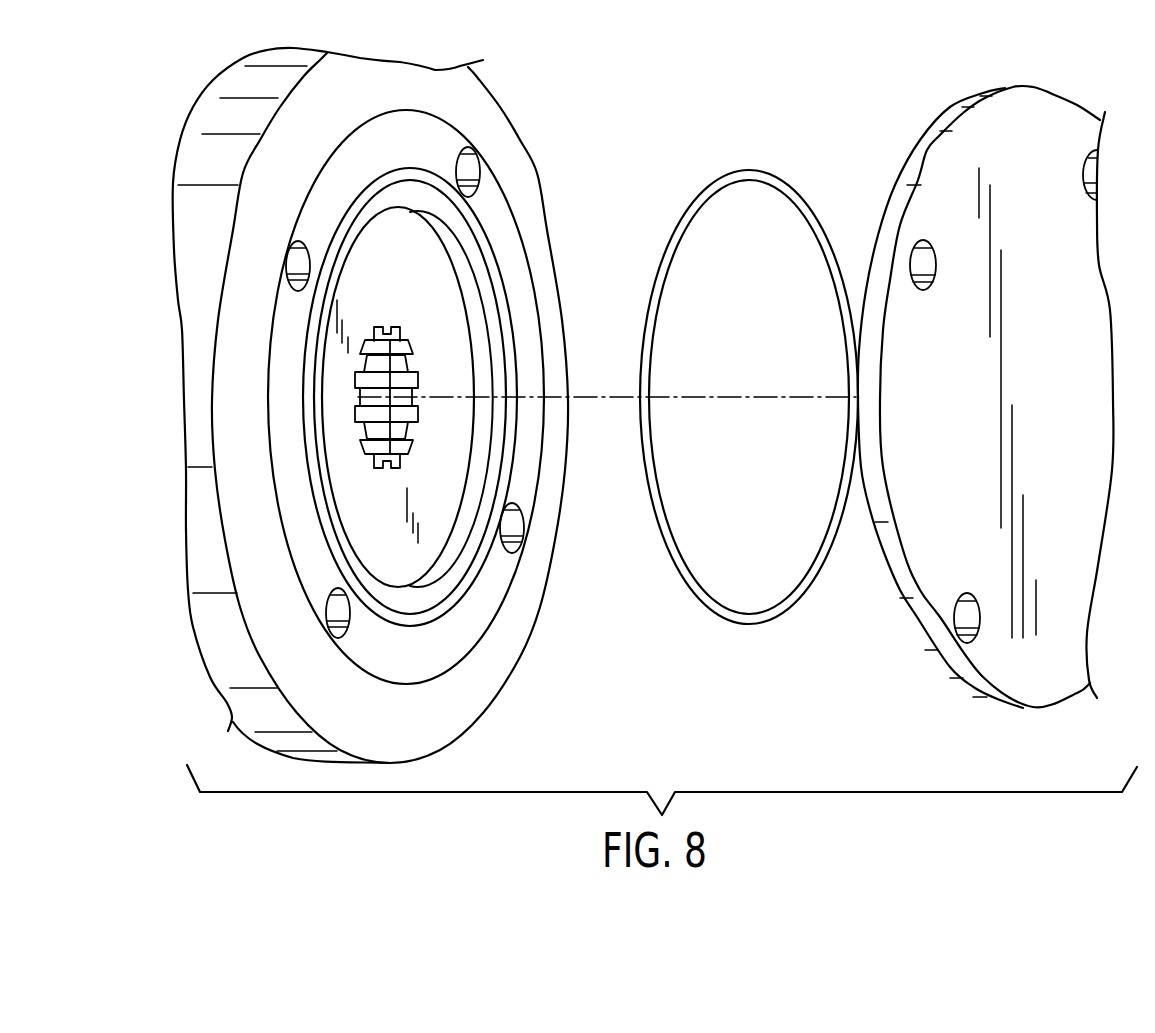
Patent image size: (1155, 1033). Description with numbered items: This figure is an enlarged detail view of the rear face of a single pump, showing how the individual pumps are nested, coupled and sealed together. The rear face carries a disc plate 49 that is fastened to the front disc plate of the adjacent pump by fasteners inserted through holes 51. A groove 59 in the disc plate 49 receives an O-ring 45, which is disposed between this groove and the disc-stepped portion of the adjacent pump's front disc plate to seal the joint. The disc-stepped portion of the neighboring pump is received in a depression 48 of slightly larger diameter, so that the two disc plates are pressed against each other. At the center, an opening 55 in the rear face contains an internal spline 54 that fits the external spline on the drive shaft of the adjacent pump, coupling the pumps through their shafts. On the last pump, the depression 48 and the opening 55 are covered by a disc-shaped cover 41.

The disc-shaped cover 41 is at (1017, 86).
The O-ring 45 is at (752, 170).
The depression 48 is at (477, 320).
The disc plate 49 is at (470, 688).
The holes 51 is at (470, 170).
The internal spline 54 is at (410, 352).
The opening 55 is at (398, 440).
The groove 59 is at (488, 253).